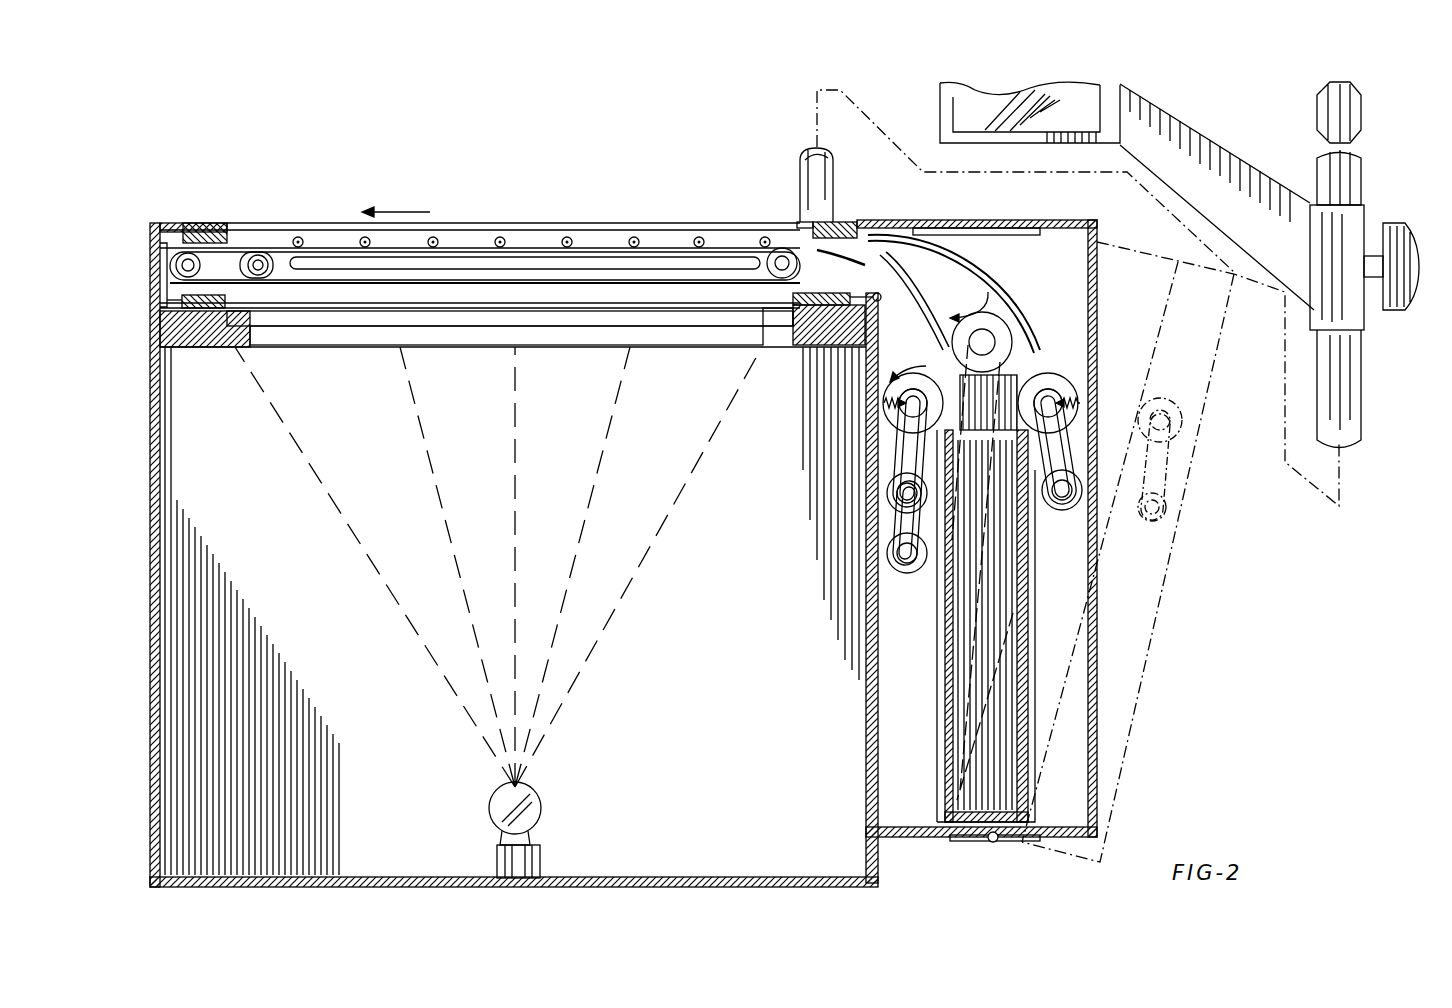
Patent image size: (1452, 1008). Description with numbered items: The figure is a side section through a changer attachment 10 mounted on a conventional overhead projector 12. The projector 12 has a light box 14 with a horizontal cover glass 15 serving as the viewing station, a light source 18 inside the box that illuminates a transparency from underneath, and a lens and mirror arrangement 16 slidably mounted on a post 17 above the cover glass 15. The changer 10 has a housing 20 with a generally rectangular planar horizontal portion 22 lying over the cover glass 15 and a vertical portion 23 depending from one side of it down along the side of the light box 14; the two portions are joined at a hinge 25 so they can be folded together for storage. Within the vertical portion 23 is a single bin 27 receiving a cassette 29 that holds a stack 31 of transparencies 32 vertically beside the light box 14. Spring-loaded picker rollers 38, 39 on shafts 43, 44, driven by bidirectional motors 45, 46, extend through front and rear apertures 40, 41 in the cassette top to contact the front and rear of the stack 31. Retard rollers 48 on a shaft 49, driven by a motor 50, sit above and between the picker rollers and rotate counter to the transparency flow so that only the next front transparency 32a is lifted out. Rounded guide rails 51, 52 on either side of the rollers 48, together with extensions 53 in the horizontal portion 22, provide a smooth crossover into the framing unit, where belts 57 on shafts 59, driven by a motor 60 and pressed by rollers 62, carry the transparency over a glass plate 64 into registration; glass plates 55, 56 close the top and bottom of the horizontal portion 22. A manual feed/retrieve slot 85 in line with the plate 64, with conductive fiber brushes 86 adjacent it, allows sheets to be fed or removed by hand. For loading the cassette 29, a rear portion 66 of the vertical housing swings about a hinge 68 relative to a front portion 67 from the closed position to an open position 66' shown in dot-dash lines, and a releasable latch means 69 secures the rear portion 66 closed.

The changer attachment 10 is at (635, 131).
The overhead projector 12 is at (142, 503).
The light box 14 is at (150, 884).
The cover glass 15 is at (305, 322).
The lens and mirror arrangement 16 is at (941, 110).
The post 17 is at (1364, 180).
The light source 18 is at (492, 815).
The housing 20 is at (1072, 222).
The horizontal portion 22 is at (150, 240).
The vertical portion 23 is at (912, 838).
The hinge 25 is at (860, 308).
The bin 27 is at (938, 606).
The cassette 29 is at (1022, 645).
The stack 31 is at (998, 766).
The transparencies 32 is at (985, 700).
The next front transparency 32a is at (905, 284).
The picker rollers 38 is at (886, 424).
The picker rollers 39 is at (1162, 398).
The front aperture 40 is at (962, 430).
The rear aperture 41 is at (1034, 388).
The shaft 43 is at (924, 372).
The shaft 44 is at (1068, 386).
The bidirectional electric motor 45 is at (887, 492).
The bidirectional electric motor 46 is at (1085, 498).
The retard rollers 48 is at (981, 326).
The shaft 49 is at (995, 338).
The bidirectional electric motor 50 is at (888, 550).
The guide rail 51 is at (875, 293).
The guide rail 52 is at (938, 236).
The extensions 53 is at (855, 240).
The glass plate 55 is at (322, 231).
The glass plate 56 is at (433, 330).
The belts 57 is at (565, 286).
The shafts 59 is at (258, 255).
The bidirectional electric motor 60 is at (150, 306).
The rollers 62 is at (452, 240).
The glass plate 64 is at (607, 256).
The rear portion 66 is at (1078, 466).
The open position 66' is at (1128, 568).
The front portion 67 is at (866, 605).
The hinge 68 is at (990, 842).
The releasable latch means 69 is at (1010, 228).
The manual feed/retrieve slot 85 is at (150, 300).
The conductive fiber brushes 86 is at (165, 238).